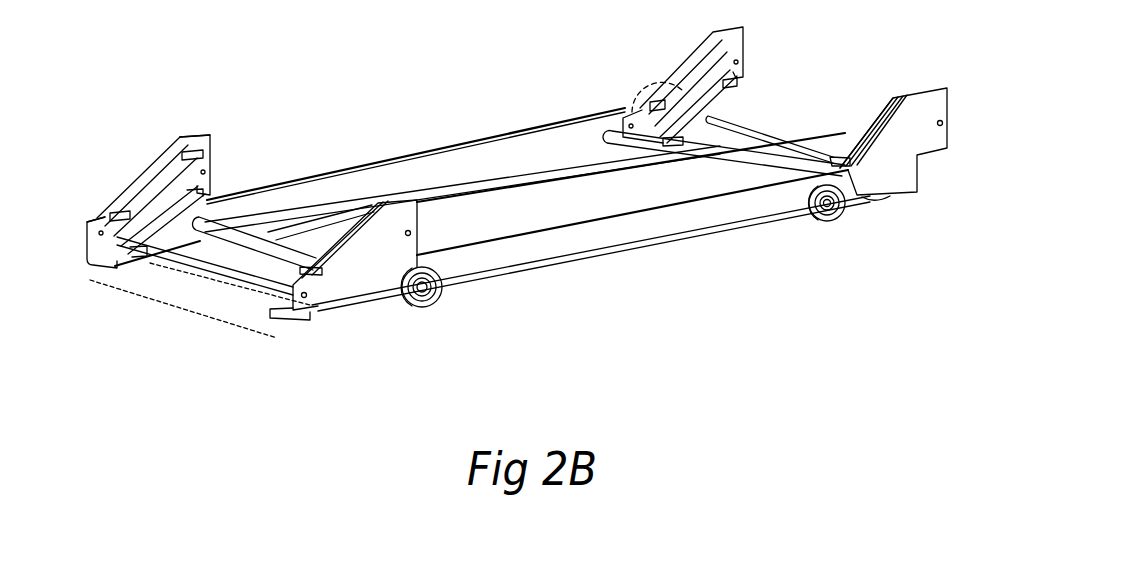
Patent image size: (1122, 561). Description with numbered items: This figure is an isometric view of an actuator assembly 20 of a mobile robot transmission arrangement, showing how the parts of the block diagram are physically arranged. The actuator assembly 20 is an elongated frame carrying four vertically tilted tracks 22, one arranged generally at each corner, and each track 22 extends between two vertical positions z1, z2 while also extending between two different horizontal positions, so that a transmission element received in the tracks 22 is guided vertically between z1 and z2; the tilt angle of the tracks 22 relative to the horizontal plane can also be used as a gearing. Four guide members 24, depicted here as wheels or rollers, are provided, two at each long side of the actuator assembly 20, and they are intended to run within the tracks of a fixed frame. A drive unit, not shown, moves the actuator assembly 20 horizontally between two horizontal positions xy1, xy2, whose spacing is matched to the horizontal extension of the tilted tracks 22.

The actuator assembly 20 is at (627, 228).
The vertically tilted tracks 22 is at (155, 190).
The guide member 24 is at (413, 300).
The vertical position z1 is at (120, 221).
The vertical position z2 is at (205, 157).
The horizontal position xy1 is at (240, 288).
The horizontal position xy2 is at (110, 288).